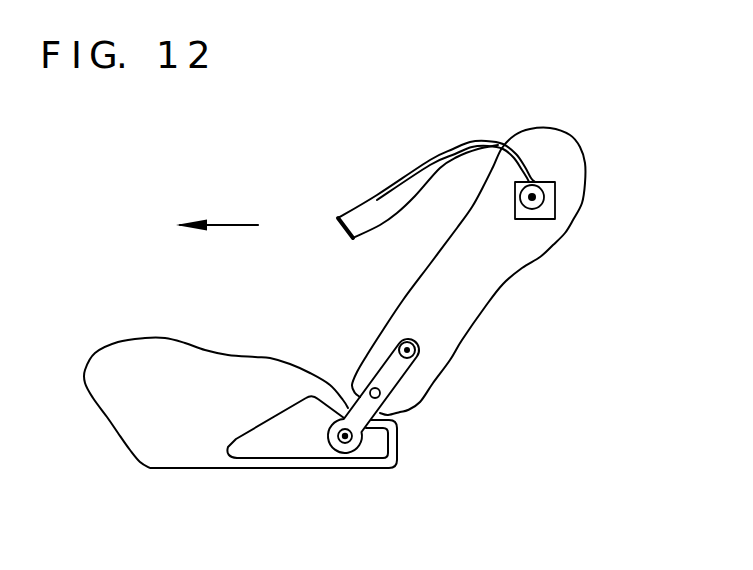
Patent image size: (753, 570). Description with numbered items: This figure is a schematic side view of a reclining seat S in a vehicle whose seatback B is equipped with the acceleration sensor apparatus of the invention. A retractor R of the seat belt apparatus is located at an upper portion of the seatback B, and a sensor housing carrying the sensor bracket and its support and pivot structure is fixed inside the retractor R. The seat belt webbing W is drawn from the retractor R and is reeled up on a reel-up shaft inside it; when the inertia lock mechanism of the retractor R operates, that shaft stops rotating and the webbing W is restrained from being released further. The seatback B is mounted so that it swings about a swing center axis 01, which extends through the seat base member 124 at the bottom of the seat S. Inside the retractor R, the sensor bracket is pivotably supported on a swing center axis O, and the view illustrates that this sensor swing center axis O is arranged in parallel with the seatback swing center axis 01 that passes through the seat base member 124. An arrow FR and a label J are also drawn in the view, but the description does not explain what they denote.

The vehicle front direction FR is at (232, 224).
The reclining seat S is at (335, 330).
The seatback B is at (515, 262).
The seat base member 124 is at (178, 451).
The swing center axis 01 is at (345, 439).
The seat belt webbing W is at (381, 200).
The retractor R is at (558, 192).
The retractor shaft J is at (529, 202).
The swing center axis O is at (544, 220).